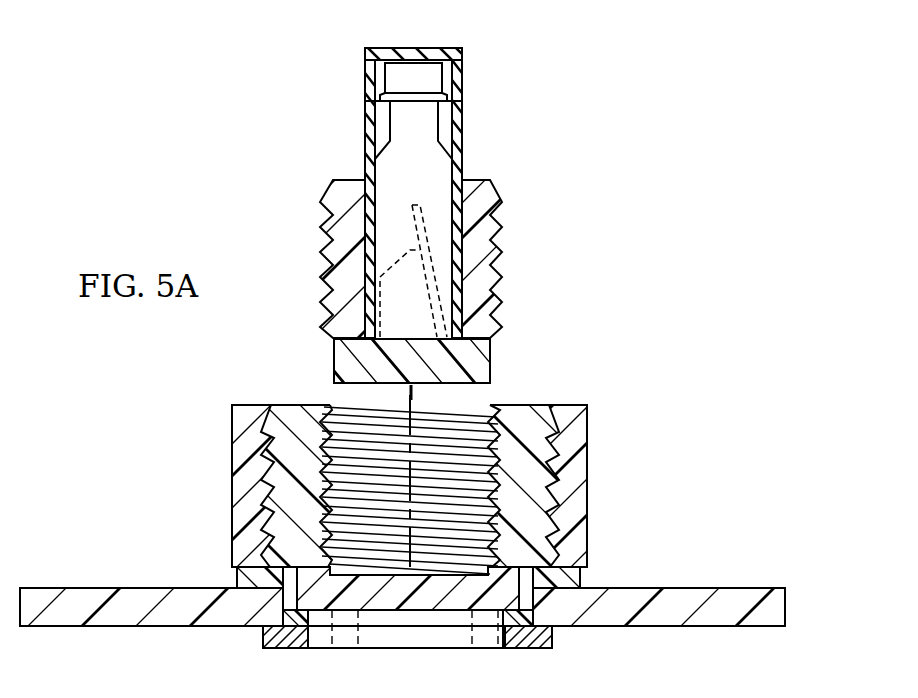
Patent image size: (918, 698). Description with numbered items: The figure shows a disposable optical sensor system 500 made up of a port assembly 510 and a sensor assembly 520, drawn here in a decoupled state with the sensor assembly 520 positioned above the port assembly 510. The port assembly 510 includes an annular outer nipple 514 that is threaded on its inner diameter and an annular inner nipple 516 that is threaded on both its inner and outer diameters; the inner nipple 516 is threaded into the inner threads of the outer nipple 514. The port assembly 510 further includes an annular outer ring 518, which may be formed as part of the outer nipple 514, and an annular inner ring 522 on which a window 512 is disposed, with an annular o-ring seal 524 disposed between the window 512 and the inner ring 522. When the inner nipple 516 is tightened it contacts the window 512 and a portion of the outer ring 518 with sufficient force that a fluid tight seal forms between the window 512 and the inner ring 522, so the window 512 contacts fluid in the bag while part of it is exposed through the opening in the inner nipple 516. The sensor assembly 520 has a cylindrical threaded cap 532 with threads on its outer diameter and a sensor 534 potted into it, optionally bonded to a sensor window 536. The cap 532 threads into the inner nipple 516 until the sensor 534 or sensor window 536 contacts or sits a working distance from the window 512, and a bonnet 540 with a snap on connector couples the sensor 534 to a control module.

The optical sensor system 500 is at (200, 102).
The port assembly 510 is at (90, 565).
The window 512 is at (430, 603).
The annular outer nipple 514 is at (233, 458).
The annular inner nipple 516 is at (336, 424).
The annular outer ring 518 is at (238, 580).
The sensor assembly 520 is at (536, 257).
The annular inner ring 522 is at (263, 638).
The annular o-ring seal 524 is at (313, 617).
The threaded cap 532 is at (322, 206).
The sensor 534 is at (413, 204).
The sensor window 536 is at (490, 366).
The bonnet 540 is at (365, 138).